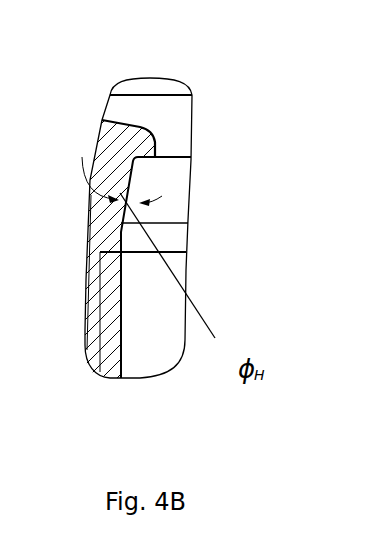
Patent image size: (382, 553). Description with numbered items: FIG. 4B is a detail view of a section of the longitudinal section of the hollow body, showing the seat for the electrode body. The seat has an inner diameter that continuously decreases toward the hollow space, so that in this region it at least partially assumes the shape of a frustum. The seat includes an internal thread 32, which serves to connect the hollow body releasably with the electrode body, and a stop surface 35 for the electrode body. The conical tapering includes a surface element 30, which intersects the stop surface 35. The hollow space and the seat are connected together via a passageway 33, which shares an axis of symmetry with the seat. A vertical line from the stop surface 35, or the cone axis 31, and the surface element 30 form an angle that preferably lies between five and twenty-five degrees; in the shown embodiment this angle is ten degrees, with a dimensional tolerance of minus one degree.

The surface element 30 is at (128, 197).
The cone axis 31 is at (130, 196).
The internal thread 32 is at (110, 305).
The passageway 33 is at (180, 140).
The stop surface 35 is at (153, 156).